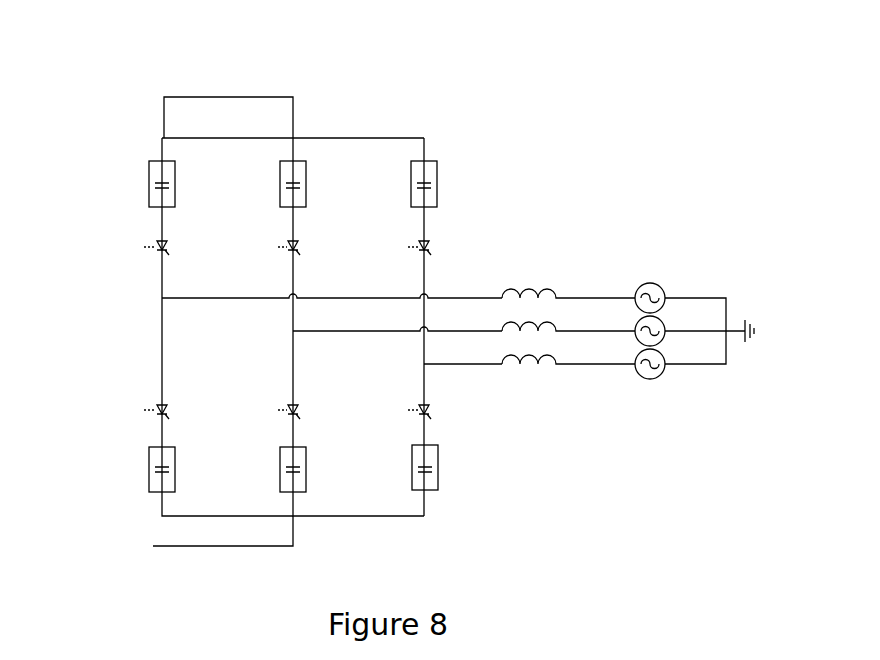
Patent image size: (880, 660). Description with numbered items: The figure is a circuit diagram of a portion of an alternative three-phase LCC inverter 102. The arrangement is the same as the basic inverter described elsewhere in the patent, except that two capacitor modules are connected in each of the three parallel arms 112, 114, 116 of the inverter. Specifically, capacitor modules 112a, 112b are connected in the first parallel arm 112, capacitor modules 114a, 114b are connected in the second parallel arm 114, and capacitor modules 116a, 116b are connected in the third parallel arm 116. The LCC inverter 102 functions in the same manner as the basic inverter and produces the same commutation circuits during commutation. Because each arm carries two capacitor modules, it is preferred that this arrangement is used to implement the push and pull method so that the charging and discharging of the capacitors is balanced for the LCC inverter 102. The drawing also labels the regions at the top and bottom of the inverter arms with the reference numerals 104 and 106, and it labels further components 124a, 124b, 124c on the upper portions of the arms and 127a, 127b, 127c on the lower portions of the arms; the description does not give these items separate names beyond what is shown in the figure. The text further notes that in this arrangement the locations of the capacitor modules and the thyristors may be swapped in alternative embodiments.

The three-phase LCC inverter 102 is at (594, 43).
The DC side / DC current Id region 104 is at (190, 97).
The DC return region 106 is at (175, 548).
The parallel arm 112 is at (160, 134).
The parallel arm 114 is at (291, 134).
The parallel arm 116 is at (422, 134).
The capacitor module 112a is at (158, 252).
The capacitor module 112b is at (158, 413).
The capacitor module 114a is at (298, 250).
The capacitor module 114b is at (298, 410).
The capacitor module 116a is at (432, 244).
The capacitor module 116b is at (432, 412).
The capacitor CapTY4 124a is at (151, 163).
The capacitor CapTY6 124b is at (305, 162).
The capacitor CapTY2 124c is at (438, 162).
The capacitor CapTY1 127a is at (150, 486).
The capacitor CapTY3 127b is at (303, 487).
The capacitor CapTY5 127c is at (438, 480).